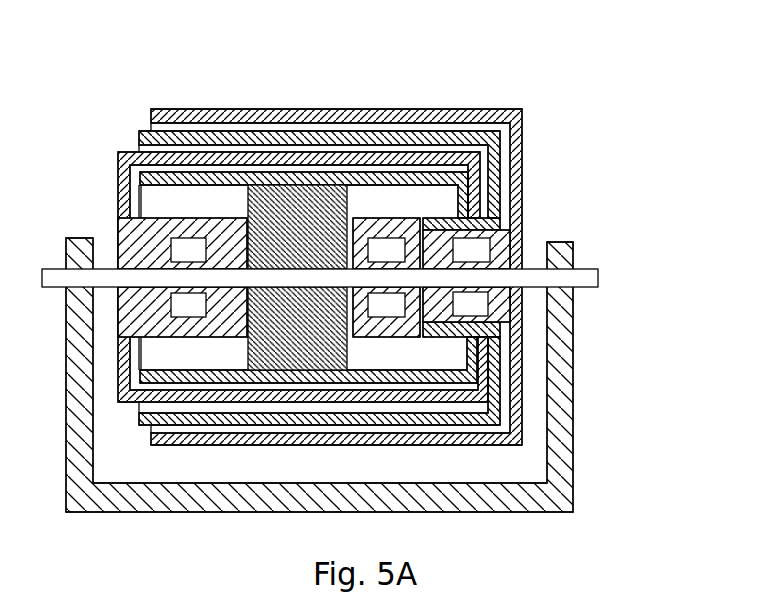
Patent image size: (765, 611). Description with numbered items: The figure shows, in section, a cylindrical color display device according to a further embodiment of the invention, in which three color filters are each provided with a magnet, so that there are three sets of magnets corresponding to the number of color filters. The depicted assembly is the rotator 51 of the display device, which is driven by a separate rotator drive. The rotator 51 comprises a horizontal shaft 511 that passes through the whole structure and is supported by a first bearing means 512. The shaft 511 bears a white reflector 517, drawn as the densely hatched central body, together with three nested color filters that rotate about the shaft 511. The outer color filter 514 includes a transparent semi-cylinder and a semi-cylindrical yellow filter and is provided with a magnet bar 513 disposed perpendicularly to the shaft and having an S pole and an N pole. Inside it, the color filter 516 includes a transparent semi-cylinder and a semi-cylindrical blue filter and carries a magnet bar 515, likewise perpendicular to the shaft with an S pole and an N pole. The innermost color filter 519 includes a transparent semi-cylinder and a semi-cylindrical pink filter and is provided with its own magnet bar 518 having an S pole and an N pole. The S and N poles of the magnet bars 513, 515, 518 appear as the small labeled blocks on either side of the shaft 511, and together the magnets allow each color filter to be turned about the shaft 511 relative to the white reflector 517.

The rotator 51 is at (586, 460).
The shaft 511 is at (568, 278).
The first bearing means 512 is at (490, 247).
The magnet bar 513 is at (527, 243).
The color filter 514 is at (513, 155).
The magnet bar 515 is at (462, 150).
The color filter 516 is at (330, 146).
The white reflector 517 is at (278, 200).
The magnet bar 518 is at (159, 238).
The color filter 519 is at (128, 245).